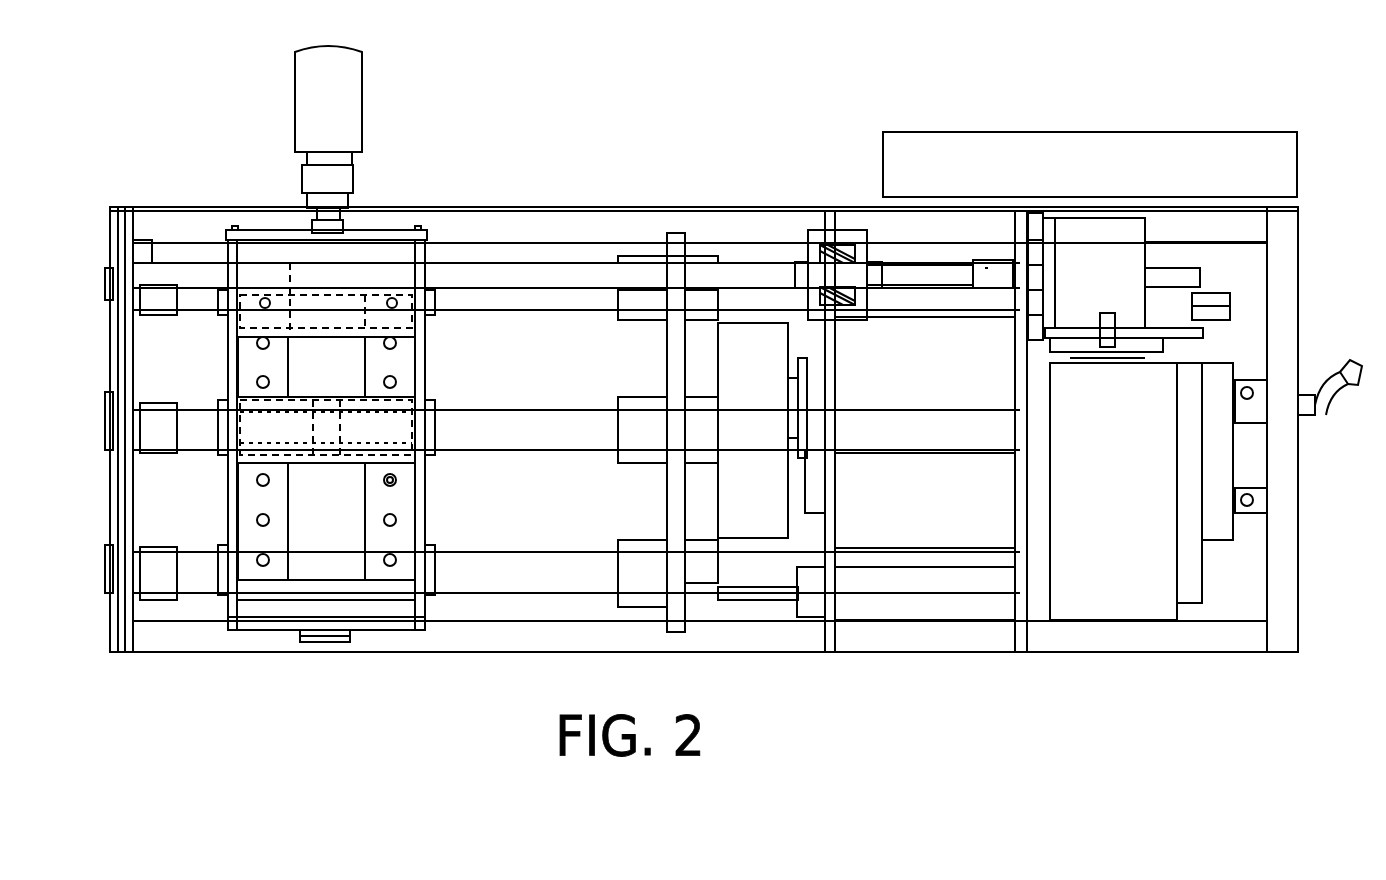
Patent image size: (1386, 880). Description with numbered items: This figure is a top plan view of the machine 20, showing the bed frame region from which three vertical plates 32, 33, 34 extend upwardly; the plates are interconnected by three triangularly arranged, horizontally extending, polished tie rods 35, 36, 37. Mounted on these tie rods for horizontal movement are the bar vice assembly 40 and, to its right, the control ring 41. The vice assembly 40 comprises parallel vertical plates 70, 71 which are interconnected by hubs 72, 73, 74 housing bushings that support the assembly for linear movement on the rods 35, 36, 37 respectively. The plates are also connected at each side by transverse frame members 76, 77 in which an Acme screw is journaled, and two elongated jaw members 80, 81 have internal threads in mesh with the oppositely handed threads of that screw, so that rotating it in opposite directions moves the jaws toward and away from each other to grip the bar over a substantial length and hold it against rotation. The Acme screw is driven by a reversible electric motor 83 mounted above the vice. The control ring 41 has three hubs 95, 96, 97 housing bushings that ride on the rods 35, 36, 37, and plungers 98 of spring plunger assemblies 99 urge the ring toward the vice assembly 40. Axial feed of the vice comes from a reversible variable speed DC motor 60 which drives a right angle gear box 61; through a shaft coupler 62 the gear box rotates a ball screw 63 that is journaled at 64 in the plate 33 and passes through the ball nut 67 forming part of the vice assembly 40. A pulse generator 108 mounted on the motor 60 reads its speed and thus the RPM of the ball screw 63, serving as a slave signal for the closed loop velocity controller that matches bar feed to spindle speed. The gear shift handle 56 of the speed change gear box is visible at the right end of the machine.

The transfer apparatus 20 is at (1318, 202).
The vertical plate 32 is at (150, 640).
The vertical plate 33 is at (835, 640).
The vertical plate 34 is at (1020, 640).
The tie rod 35 is at (490, 302).
The tie rod 36 is at (523, 445).
The tie rod 37 is at (533, 565).
The bar vice assembly 40 is at (351, 378).
The control ring 41 is at (677, 233).
The gear shift handle 56 is at (1338, 400).
The reversible variable speed DC motor 60 is at (1150, 560).
The right angle gear box 61 is at (1110, 226).
The shaft coupler 62 is at (935, 270).
The ball screw 63 is at (567, 252).
The journal 64 is at (845, 230).
The ball nut 67 is at (268, 330).
The vertical plate 70 is at (230, 632).
The vertical plate 71 is at (450, 632).
The hub 72 is at (447, 243).
The hub 73 is at (365, 465).
The hub 74 is at (440, 580).
The transverse frame member 76 is at (388, 247).
The transverse frame member 77 is at (380, 635).
The jaw member 80 is at (255, 352).
The jaw member 81 is at (255, 503).
The reversible electric motor 83 is at (357, 95).
The hub 95 is at (650, 322).
The hub 96 is at (643, 465).
The hub 97 is at (640, 610).
The plunger 98 is at (745, 598).
The spring plunger assembly 99 is at (947, 610).
The pulse generator 108 is at (1158, 357).